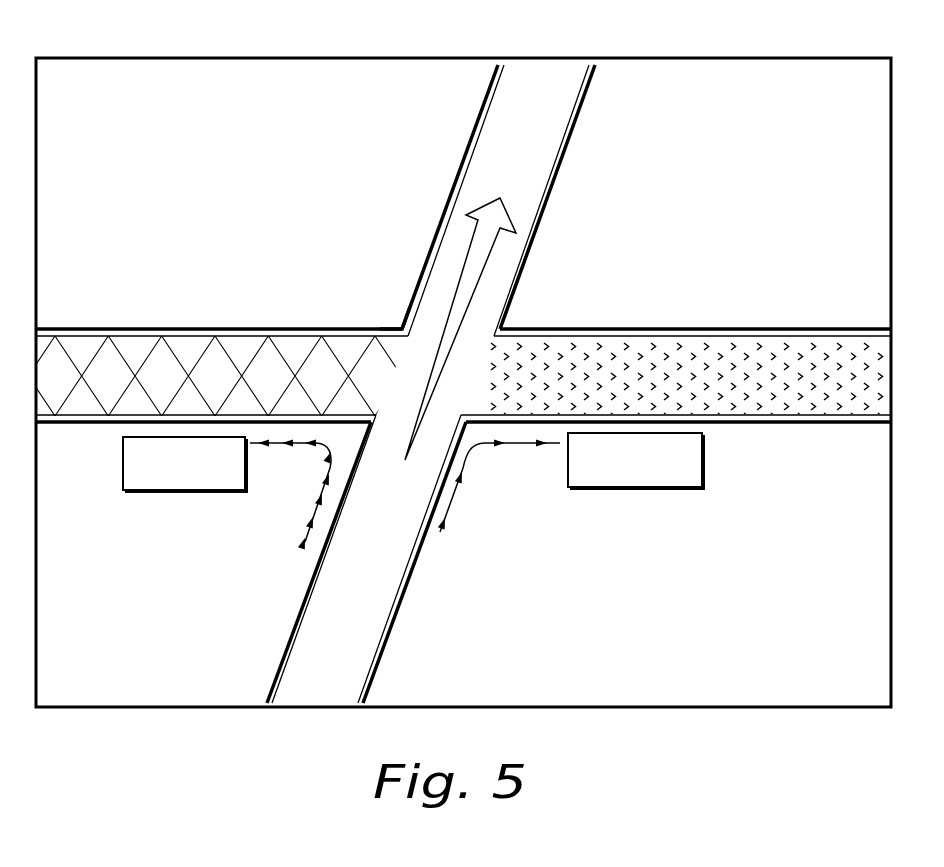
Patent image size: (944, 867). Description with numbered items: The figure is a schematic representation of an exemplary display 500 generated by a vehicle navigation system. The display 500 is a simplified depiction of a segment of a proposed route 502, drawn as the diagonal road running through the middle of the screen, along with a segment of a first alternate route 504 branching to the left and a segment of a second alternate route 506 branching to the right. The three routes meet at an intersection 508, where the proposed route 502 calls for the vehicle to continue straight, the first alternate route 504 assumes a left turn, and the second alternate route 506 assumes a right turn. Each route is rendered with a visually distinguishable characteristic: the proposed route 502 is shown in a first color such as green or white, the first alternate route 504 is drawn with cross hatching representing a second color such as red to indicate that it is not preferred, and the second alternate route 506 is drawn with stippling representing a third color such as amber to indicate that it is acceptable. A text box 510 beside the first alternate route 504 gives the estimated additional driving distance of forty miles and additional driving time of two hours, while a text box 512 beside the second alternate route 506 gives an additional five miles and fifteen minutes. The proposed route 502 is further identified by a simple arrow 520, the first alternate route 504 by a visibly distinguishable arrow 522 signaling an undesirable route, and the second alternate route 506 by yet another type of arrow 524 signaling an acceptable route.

The display 500 is at (328, 57).
The proposed route 502 is at (452, 193).
The first alternate route 504 is at (188, 330).
The second alternate route 506 is at (706, 330).
The intersection 508 is at (388, 313).
The text box 510 is at (168, 491).
The text box 512 is at (670, 488).
The arrow 520 is at (498, 250).
The visibly distinguishable arrow 522 is at (313, 516).
The arrow 524 is at (457, 490).